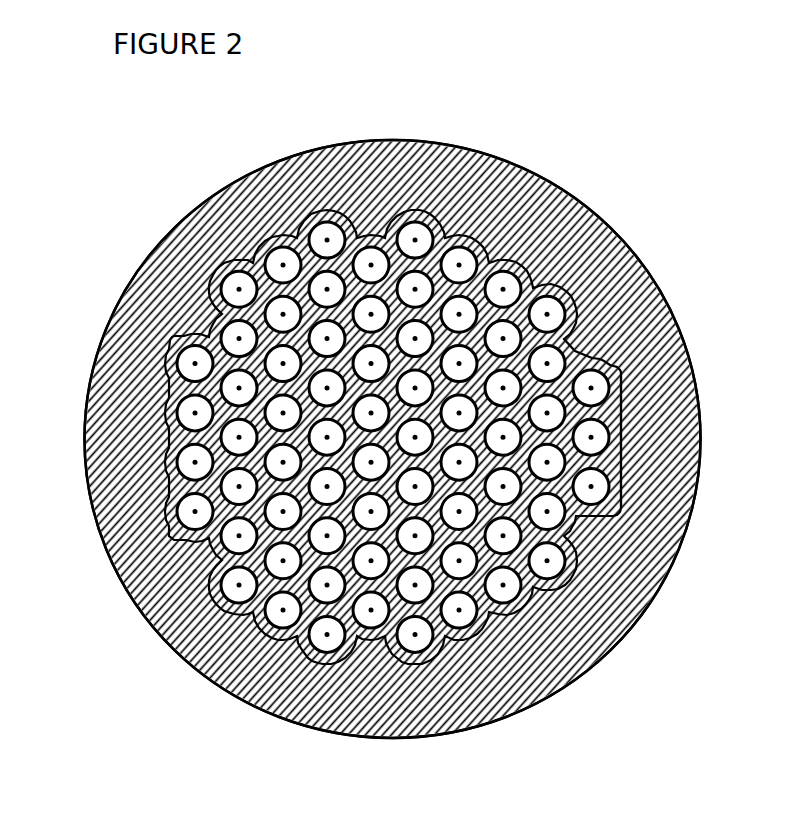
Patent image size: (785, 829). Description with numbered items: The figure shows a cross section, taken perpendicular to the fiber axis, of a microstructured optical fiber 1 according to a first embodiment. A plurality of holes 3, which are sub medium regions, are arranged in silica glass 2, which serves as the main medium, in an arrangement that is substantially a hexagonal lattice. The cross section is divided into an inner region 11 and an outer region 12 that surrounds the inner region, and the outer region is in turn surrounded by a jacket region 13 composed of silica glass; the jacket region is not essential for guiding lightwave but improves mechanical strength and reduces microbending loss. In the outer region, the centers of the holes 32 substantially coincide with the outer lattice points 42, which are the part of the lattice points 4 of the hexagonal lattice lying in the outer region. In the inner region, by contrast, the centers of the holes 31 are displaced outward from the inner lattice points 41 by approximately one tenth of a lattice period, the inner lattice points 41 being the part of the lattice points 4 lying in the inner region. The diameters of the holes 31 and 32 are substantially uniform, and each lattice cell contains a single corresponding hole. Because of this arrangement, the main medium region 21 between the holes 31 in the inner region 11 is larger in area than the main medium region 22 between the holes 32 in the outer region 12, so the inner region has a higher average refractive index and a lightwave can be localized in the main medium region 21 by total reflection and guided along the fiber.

The optical fiber 1 is at (597, 210).
The silica glass 2 is at (610, 283).
The holes 3 is at (653, 313).
The lattice points 4 is at (636, 404).
The inner region 11 is at (275, 454).
The outer region 12 is at (287, 533).
The jacket region 13 is at (622, 553).
The main medium region 21 is at (386, 397).
The main medium region 22 is at (477, 450).
The holes 31 is at (335, 407).
The holes 32 is at (231, 528).
The inner lattice points 41 is at (363, 405).
The outer lattice points 42 is at (200, 548).